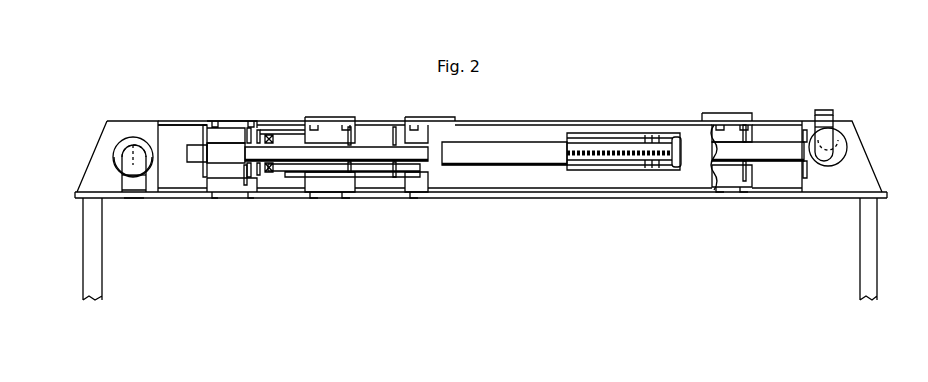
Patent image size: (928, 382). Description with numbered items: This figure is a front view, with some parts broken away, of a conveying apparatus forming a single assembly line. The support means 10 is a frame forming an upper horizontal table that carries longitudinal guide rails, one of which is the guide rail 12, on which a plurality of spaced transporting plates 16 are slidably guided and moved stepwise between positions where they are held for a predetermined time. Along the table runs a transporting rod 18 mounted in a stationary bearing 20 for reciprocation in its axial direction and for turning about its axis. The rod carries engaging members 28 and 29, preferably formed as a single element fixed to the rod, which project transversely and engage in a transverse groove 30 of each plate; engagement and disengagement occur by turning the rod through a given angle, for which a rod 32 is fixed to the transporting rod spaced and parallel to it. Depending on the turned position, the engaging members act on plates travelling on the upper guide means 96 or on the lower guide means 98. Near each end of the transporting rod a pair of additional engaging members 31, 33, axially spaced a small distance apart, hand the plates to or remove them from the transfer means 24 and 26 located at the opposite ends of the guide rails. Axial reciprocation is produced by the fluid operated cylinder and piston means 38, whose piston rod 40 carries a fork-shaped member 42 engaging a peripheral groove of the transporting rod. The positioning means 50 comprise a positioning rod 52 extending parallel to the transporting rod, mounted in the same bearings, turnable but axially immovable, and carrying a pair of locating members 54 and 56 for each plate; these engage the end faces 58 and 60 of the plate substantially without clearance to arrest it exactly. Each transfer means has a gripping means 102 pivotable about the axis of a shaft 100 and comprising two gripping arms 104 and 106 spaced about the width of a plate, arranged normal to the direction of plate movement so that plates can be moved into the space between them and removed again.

The support means 10 is at (855, 186).
The guide rail 12 is at (195, 126).
The transporting plate 16 is at (330, 117).
The transporting rod 18 is at (778, 150).
The stationary bearing 20 is at (270, 136).
The transfer means 24 is at (114, 131).
The transfer means 26 is at (862, 137).
The engaging member 28 is at (342, 128).
The engaging member 29 is at (742, 178).
The transverse groove 30 is at (745, 128).
The additional engaging member 31 is at (243, 128).
The rod 32 is at (378, 177).
The additional engaging member 33 is at (245, 186).
The fluid operated cylinder and piston means 38 is at (521, 172).
The piston rod 40 is at (608, 160).
The fork-shaped member 42 is at (676, 168).
The positioning means 50 is at (193, 172).
The positioning rod 52 is at (225, 150).
The locating member 54 is at (300, 128).
The locating member 56 is at (365, 127).
The end face 58 is at (205, 125).
The end face 60 is at (258, 128).
The upper guide means 96 is at (173, 117).
The lower guide means 98 is at (781, 181).
The shaft 100 is at (133, 137).
The gripping means 102 is at (108, 184).
The gripping arm 104 is at (131, 199).
The gripping arm 106 is at (120, 172).